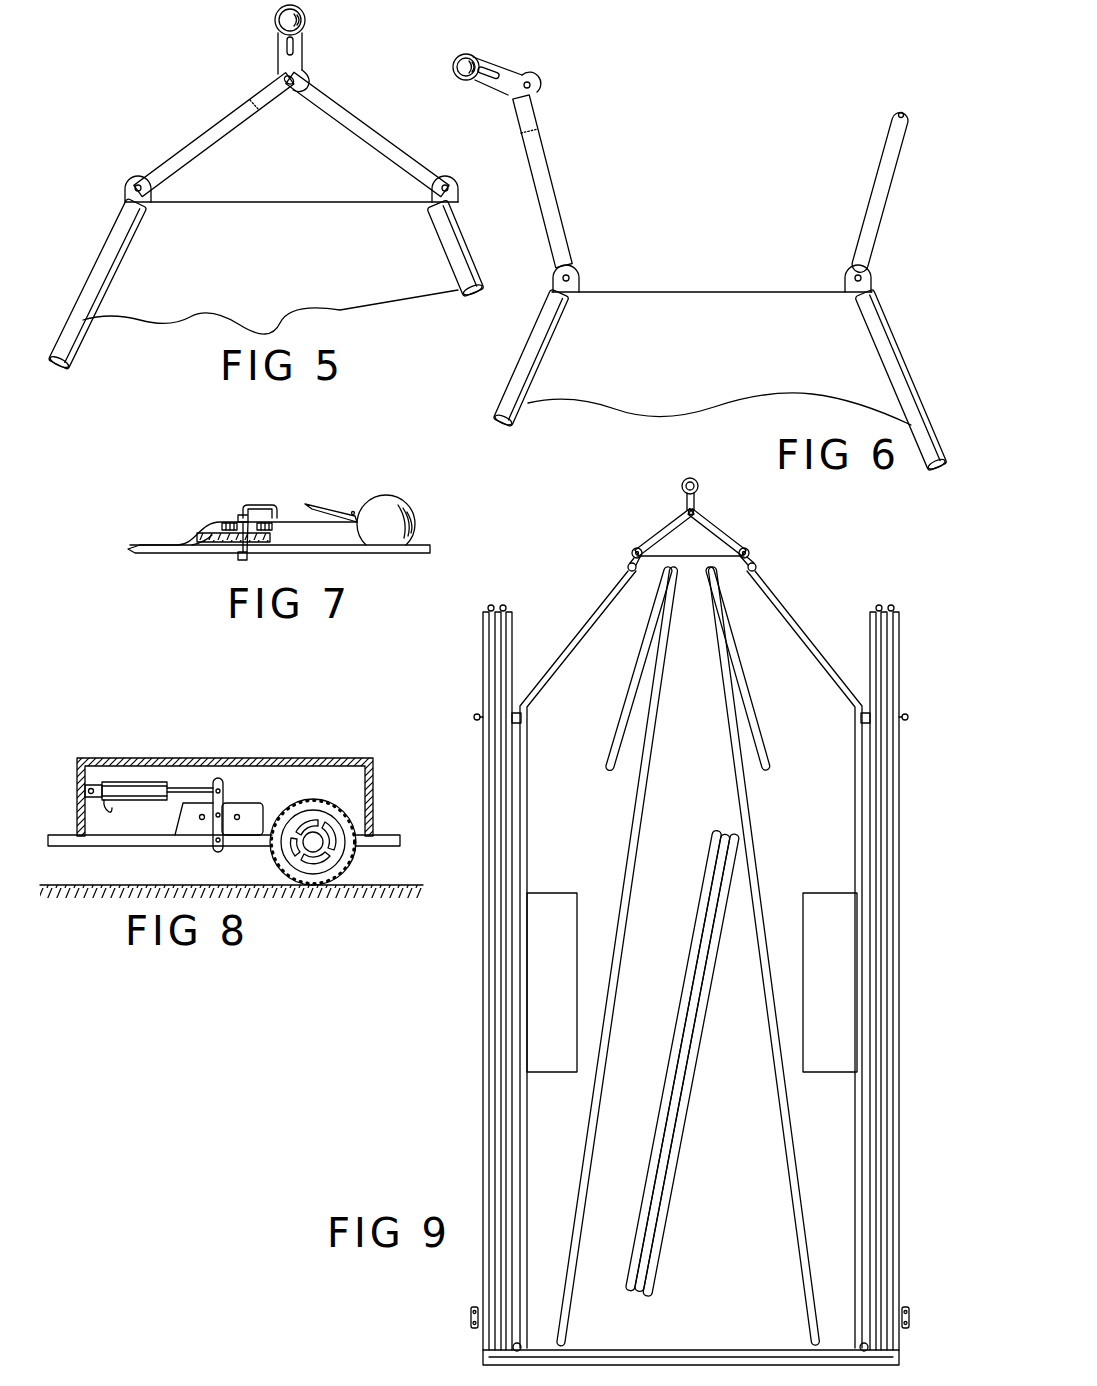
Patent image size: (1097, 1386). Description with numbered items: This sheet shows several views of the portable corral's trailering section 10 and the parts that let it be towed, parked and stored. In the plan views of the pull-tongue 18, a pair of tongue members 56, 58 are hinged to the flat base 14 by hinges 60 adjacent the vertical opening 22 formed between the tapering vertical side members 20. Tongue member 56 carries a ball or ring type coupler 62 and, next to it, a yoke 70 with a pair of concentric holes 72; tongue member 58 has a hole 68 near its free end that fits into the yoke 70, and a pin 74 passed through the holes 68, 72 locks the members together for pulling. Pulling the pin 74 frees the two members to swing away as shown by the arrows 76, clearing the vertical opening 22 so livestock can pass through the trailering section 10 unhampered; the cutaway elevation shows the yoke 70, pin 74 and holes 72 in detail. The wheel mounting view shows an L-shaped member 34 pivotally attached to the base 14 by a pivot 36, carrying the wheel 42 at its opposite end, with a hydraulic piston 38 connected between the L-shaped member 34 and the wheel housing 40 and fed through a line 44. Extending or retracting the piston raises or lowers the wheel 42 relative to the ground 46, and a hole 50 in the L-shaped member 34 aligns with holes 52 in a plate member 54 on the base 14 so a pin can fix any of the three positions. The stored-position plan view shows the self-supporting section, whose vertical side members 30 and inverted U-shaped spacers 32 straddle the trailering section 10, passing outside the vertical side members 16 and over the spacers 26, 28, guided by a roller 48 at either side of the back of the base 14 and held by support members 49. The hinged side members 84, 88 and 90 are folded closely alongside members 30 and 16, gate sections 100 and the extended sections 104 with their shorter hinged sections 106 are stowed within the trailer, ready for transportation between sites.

In FIG. 5, the trailering section 10 is at (75, 253).
In FIG. 6, the trailering section 10 is at (895, 285).
In FIG. 5, the base 14 is at (227, 211).
In FIG. 6, the base 14 is at (626, 303).
In FIG. 8, the base 14 is at (62, 835).
In FIG. 9, the base 14 is at (748, 1163).
In FIG. 9, the vertical side members 16 is at (528, 773).
In FIG. 5, the pull-tongue 18 is at (219, 99).
In FIG. 6, the pull-tongue 18 is at (557, 83).
In FIG. 9, the pull-tongue 18 is at (729, 516).
In FIG. 5, the vertical side members 20 is at (90, 318).
In FIG. 6, the vertical side members 20 is at (530, 351).
In FIG. 9, the vertical side members 20 is at (587, 619).
In FIG. 5, the vertical opening 22 is at (275, 222).
In FIG. 6, the vertical opening 22 is at (703, 253).
In FIG. 9, the spacers 26 is at (627, 567).
In FIG. 9, the spacers 28 is at (519, 1344).
In FIG. 9, the vertical side members 30 is at (491, 1165).
In FIG. 9, the spacers 32 is at (693, 1357).
In FIG. 8, the L-shaped member 34 is at (238, 848).
In FIG. 8, the pivot 36 is at (216, 843).
In FIG. 8, the hydraulic piston 38 is at (128, 784).
In FIG. 8, the wheel housing 40 is at (302, 758).
In FIG. 9, the wheel housing 40 is at (561, 894).
In FIG. 8, the wheel 42 is at (355, 858).
In FIG. 8, the line 44 is at (112, 812).
In FIG. 8, the ground 46 is at (73, 897).
In FIG. 9, the roller 48 is at (470, 1310).
In FIG. 9, the support members 49 is at (477, 714).
In FIG. 8, the hole 50 is at (221, 815).
In FIG. 8, the holes 52 is at (201, 815).
In FIG. 8, the plate member 54 is at (185, 817).
In FIG. 5, the tongue member 56 is at (195, 147).
In FIG. 6, the tongue member 56 is at (522, 145).
In FIG. 7, the tongue member 56 is at (143, 546).
In FIG. 9, the tongue member 56 is at (668, 521).
In FIG. 5, the tongue member 58 is at (366, 129).
In FIG. 6, the tongue member 58 is at (899, 160).
In FIG. 7, the tongue member 58 is at (202, 547).
In FIG. 9, the tongue member 58 is at (735, 539).
In FIG. 5, the hinges 60 is at (135, 181).
In FIG. 6, the hinges 60 is at (579, 265).
In FIG. 9, the hinges 60 is at (634, 550).
In FIG. 5, the coupler 62 is at (275, 18).
In FIG. 6, the coupler 62 is at (481, 55).
In FIG. 7, the coupler 62 is at (383, 507).
In FIG. 9, the coupler 62 is at (699, 483).
In FIG. 6, the hole 68 is at (905, 107).
In FIG. 7, the hole 68 is at (238, 544).
In FIG. 5, the yoke 70 is at (303, 77).
In FIG. 6, the yoke 70 is at (527, 80).
In FIG. 7, the yoke 70 is at (217, 509).
In FIG. 6, the holes 72 is at (531, 88).
In FIG. 7, the holes 72 is at (258, 520).
In FIG. 5, the pin 74 is at (290, 98).
In FIG. 7, the pin 74 is at (247, 510).
In FIG. 6, the arrows 76 is at (570, 135).
In FIG. 9, the side members 84 is at (483, 1111).
In FIG. 9, the side members 88 is at (498, 1031).
In FIG. 9, the side members 90 is at (507, 1076).
In FIG. 9, the gate sections 100 is at (666, 1230).
In FIG. 9, the sections 104 is at (650, 773).
In FIG. 9, the sections 106 is at (633, 685).